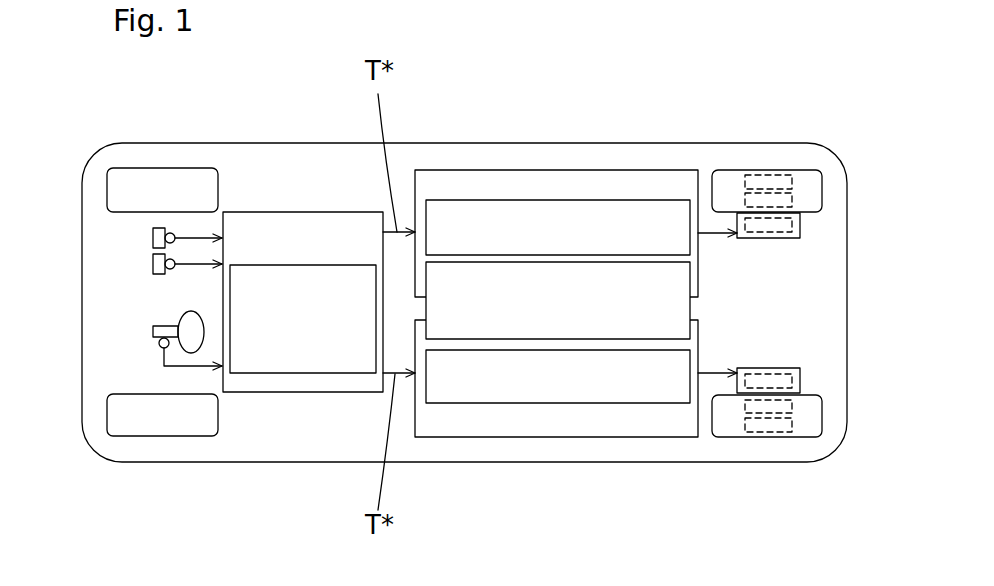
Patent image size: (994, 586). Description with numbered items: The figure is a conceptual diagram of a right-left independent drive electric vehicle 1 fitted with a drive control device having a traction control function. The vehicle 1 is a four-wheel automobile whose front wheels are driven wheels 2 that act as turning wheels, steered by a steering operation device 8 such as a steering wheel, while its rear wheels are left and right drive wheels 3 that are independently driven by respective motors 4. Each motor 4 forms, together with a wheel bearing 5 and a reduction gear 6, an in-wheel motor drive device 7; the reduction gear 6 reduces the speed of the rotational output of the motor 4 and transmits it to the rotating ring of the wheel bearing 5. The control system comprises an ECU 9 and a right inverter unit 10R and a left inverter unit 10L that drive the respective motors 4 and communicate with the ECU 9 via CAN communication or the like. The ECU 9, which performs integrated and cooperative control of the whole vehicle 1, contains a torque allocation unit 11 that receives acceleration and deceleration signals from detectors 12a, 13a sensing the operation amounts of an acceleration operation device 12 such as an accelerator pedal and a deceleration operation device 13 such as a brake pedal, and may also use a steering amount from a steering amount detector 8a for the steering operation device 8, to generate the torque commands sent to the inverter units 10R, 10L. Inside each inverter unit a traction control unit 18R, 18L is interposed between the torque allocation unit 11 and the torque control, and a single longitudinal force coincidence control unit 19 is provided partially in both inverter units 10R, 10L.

The vehicle 1 is at (316, 157).
The driven wheel 2 is at (155, 168).
The drive wheel 3 is at (722, 176).
The motor 4 is at (790, 226).
The wheel bearing 5 is at (762, 183).
The reduction gear 6 is at (787, 200).
The in-wheel motor drive device 7 is at (845, 89).
The steering operation device 8 is at (180, 317).
The steering amount detector 8a is at (158, 344).
The ECU 9 is at (283, 212).
The right inverter unit 10R is at (520, 181).
The left inverter unit 10L is at (522, 432).
The torque allocation unit 11 is at (322, 374).
The acceleration operation device 12 is at (153, 238).
The detector 12a is at (166, 229).
The deceleration operation device 13 is at (153, 264).
The detector 13a is at (168, 272).
The traction control unit 18R is at (642, 222).
The traction control unit 18L is at (670, 373).
The longitudinal force coincidence control unit 19 is at (705, 232).